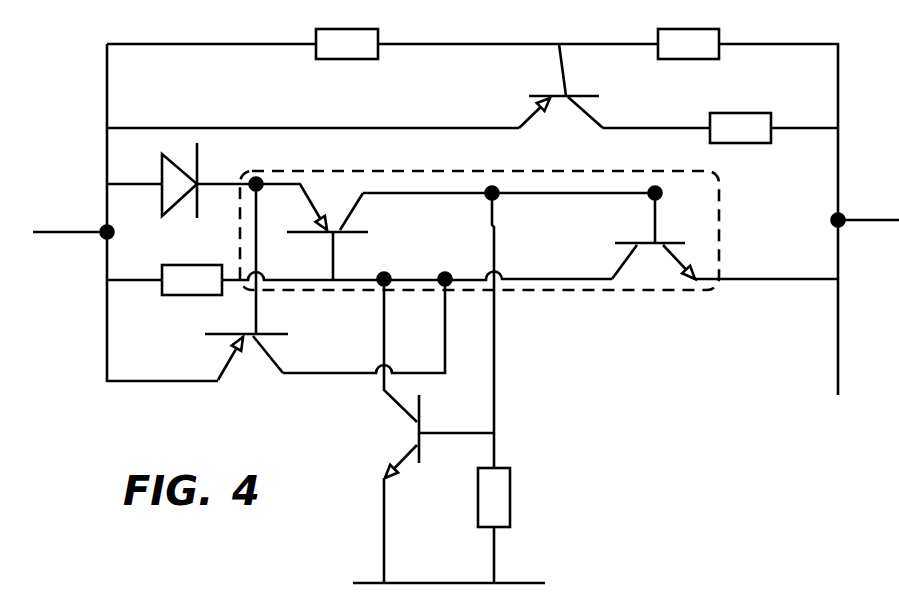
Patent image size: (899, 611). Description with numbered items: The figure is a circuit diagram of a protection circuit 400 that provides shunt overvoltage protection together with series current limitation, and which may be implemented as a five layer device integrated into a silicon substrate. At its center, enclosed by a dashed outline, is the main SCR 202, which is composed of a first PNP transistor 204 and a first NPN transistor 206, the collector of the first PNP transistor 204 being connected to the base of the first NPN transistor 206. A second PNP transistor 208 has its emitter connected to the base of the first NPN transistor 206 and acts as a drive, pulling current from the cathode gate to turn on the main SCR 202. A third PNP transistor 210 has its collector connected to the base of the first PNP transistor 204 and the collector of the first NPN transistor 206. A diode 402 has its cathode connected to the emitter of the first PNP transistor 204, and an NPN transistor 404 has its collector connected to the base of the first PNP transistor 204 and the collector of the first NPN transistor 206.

The protection circuit 400 is at (466, 307).
The diode 402 is at (160, 183).
The NPN transistor 404 is at (402, 410).
The main SCR 202 is at (540, 290).
The first PNP transistor 204 is at (300, 233).
The first NPN transistor 206 is at (633, 262).
The second PNP transistor 208 is at (553, 93).
The third PNP transistor 210 is at (228, 365).